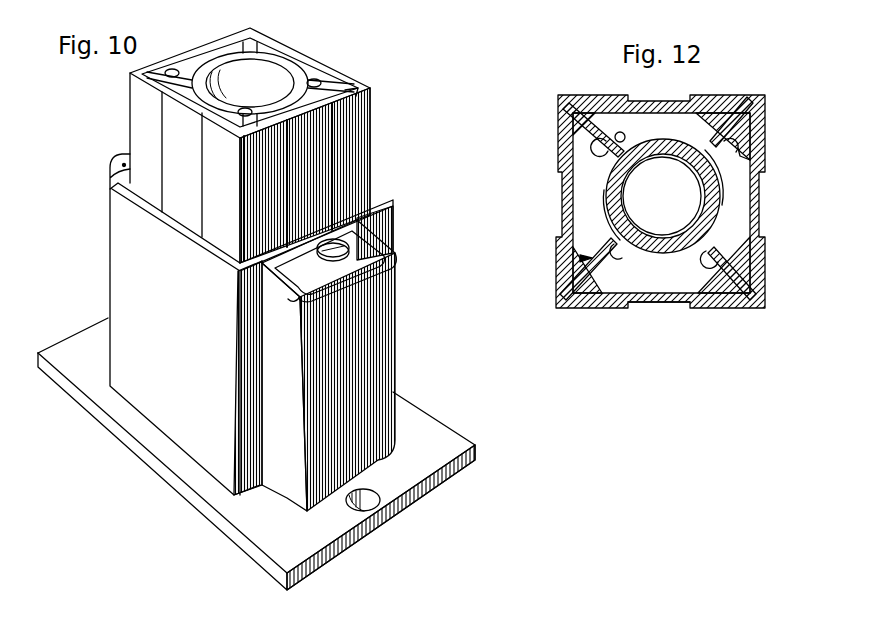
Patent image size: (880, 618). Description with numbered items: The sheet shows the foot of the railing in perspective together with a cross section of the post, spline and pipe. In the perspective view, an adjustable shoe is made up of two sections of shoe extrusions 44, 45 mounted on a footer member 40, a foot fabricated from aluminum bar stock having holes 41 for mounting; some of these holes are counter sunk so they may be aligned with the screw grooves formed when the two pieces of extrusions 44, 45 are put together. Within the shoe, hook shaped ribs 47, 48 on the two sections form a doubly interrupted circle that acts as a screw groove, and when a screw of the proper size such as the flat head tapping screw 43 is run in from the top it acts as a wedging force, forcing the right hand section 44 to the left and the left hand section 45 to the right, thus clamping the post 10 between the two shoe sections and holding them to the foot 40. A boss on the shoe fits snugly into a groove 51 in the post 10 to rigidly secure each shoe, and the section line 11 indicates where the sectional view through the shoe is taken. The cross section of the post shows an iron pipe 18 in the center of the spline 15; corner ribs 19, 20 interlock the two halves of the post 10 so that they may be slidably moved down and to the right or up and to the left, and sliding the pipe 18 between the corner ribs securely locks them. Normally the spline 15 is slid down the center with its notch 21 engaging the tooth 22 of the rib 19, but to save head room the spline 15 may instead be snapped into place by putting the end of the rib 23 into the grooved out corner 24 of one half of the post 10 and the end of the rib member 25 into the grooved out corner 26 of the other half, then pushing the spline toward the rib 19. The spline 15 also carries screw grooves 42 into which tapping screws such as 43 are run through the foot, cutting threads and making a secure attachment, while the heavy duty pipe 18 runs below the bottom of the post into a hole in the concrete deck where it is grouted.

In FIG. 10, the post 10 is at (249, 145).
In FIG. 12, the post 10 is at (757, 212).
In FIG. 10, the spline 15 is at (289, 68).
In FIG. 12, the spline 15 is at (716, 151).
In FIG. 12, the iron pipe 18 is at (671, 160).
In FIG. 12, the corner rib 19 is at (750, 160).
In FIG. 12, the corner rib 20 is at (760, 128).
In FIG. 12, the notch 21 is at (613, 248).
In FIG. 12, the tooth 22 is at (580, 259).
In FIG. 10, the rib 23 is at (358, 88).
In FIG. 12, the rib 23 is at (753, 309).
In FIG. 12, the grooved out corner 24 is at (746, 290).
In FIG. 10, the rib member 25 is at (149, 73).
In FIG. 12, the rib member 25 is at (574, 108).
In FIG. 12, the grooved out corner 26 is at (570, 106).
In FIG. 10, the footer member 40 is at (450, 475).
In FIG. 10, the holes 41 is at (380, 501).
In FIG. 10, the screw grooves 42 is at (321, 83).
In FIG. 12, the screw grooves 42 is at (597, 147).
In FIG. 10, the flat head tapping screw 43 is at (376, 242).
In FIG. 10, the shoe extrusion 44 is at (384, 204).
In FIG. 10, the shoe extrusion 45 is at (111, 206).
In FIG. 10, the hook shaped rib 47 is at (298, 291).
In FIG. 10, the hook shaped rib 48 is at (348, 248).
In FIG. 12, the groove 51 is at (648, 303).
In FIG. 10, the section line 11- 11 is at (433, 345).